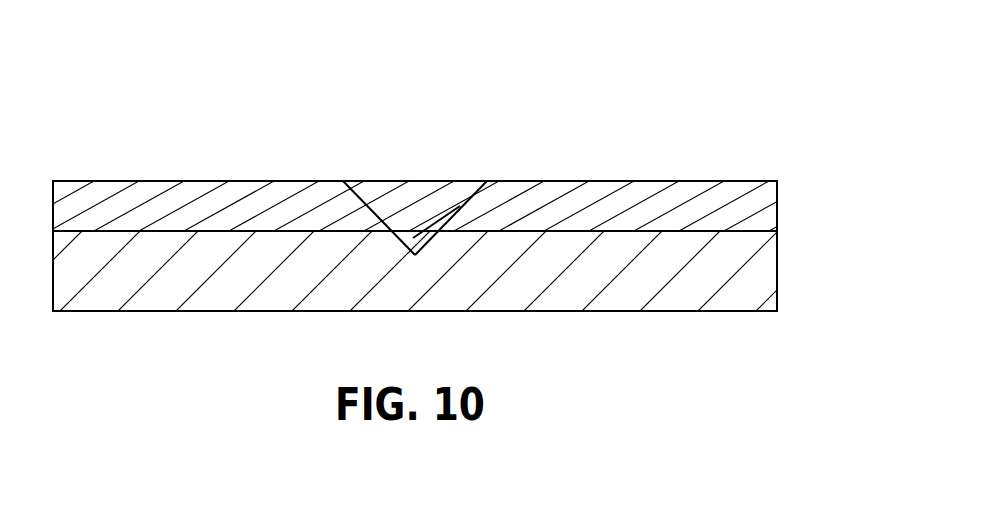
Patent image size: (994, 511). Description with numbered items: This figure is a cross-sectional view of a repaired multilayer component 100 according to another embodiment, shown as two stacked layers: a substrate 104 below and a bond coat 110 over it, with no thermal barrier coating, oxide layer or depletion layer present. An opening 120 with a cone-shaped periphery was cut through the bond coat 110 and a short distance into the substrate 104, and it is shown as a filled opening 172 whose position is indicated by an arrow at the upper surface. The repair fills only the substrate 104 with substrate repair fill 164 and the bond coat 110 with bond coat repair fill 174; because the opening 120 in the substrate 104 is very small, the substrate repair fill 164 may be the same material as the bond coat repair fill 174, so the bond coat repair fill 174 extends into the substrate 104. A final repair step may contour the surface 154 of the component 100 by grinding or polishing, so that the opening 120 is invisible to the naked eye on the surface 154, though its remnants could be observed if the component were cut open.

The multilayer component 100 is at (150, 124).
The bond coat 110 is at (748, 203).
The substrate 104 is at (747, 271).
The surface 154 is at (305, 181).
The filled opening 172 is at (396, 156).
The bond coat repair fill 174 is at (440, 200).
The substrate repair fill 164 is at (413, 240).
The opening 120 is at (460, 206).